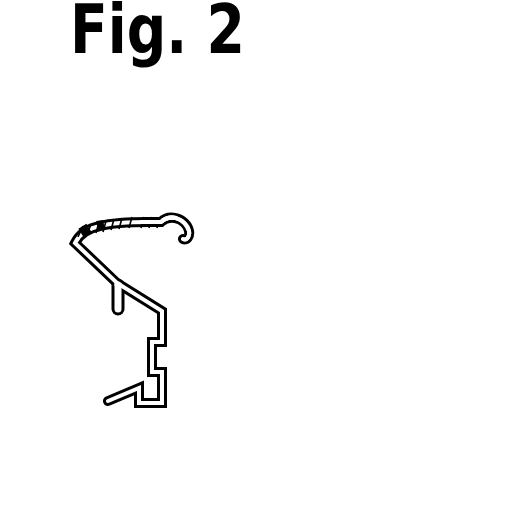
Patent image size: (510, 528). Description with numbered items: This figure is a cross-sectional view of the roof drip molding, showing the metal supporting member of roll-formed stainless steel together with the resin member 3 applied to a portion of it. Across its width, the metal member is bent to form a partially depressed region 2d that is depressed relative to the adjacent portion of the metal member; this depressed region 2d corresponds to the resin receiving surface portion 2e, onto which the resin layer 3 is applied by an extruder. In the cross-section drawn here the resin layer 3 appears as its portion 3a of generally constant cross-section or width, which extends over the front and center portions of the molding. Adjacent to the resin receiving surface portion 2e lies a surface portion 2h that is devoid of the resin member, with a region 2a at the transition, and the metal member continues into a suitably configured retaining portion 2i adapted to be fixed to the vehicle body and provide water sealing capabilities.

The portion of generally constant cross-section 3a is at (93, 226).
The resin receiving surface portion 2e is at (120, 222).
The partially depressed region 2d is at (158, 214).
The resin member 3 is at (150, 219).
The engaging portion 2a is at (186, 219).
The surface portion devoid of the resin member 2h is at (196, 236).
The retaining portion 2i is at (168, 322).